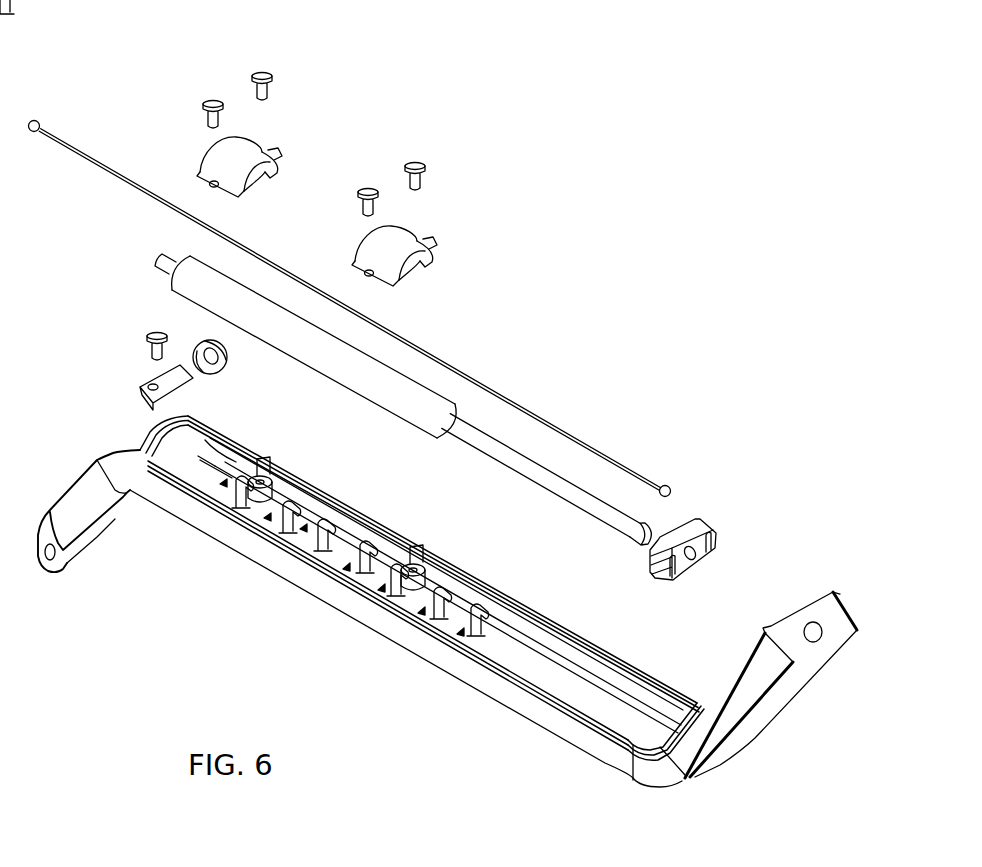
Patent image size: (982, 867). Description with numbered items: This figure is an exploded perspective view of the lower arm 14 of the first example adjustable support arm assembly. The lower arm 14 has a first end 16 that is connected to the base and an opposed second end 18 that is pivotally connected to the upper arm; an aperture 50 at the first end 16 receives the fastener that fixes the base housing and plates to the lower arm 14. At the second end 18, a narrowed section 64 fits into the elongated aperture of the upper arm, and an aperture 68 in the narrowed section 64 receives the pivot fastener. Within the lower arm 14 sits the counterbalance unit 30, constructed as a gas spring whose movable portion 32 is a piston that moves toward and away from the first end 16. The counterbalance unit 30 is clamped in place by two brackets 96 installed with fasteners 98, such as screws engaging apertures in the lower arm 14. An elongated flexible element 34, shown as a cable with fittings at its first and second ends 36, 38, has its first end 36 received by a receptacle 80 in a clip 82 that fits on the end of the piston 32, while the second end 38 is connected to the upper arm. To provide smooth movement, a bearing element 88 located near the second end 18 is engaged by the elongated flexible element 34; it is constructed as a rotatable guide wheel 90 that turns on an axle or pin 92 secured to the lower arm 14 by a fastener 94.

The lower arm 14 is at (491, 702).
The first end of the lower arm 16 is at (771, 671).
The second end of the lower arm 18 is at (93, 540).
The counterbalance unit 30 is at (405, 323).
The movable portion 32 is at (548, 478).
The elongated flexible element 34 is at (378, 280).
The first end of the elongated flexible element 36 is at (671, 485).
The second end of the elongated flexible element 38 is at (36, 120).
The aperture 50 is at (813, 622).
The narrowed section 64 is at (85, 555).
The aperture 68 is at (53, 560).
The receptacle 80 is at (727, 510).
The clip 82 is at (707, 523).
The bearing element 88 is at (193, 333).
The rotatable guide wheel 90 is at (195, 347).
The axle or pin 92 is at (177, 373).
The fastener 94 is at (145, 339).
The brackets 96 is at (233, 147).
The fasteners 98 is at (258, 72).